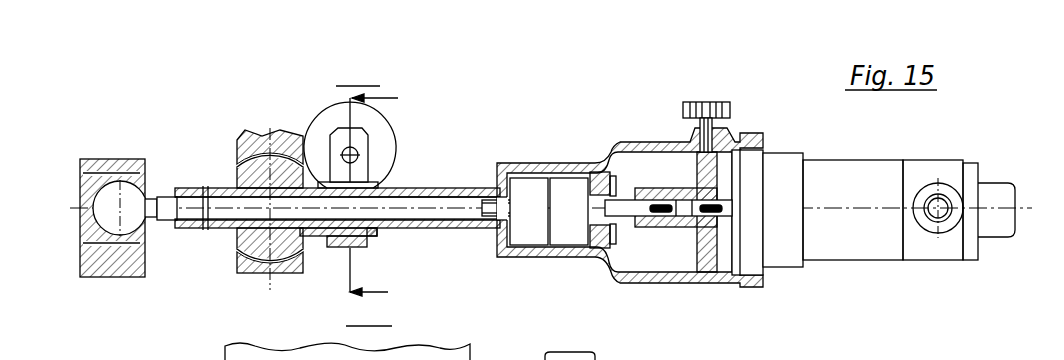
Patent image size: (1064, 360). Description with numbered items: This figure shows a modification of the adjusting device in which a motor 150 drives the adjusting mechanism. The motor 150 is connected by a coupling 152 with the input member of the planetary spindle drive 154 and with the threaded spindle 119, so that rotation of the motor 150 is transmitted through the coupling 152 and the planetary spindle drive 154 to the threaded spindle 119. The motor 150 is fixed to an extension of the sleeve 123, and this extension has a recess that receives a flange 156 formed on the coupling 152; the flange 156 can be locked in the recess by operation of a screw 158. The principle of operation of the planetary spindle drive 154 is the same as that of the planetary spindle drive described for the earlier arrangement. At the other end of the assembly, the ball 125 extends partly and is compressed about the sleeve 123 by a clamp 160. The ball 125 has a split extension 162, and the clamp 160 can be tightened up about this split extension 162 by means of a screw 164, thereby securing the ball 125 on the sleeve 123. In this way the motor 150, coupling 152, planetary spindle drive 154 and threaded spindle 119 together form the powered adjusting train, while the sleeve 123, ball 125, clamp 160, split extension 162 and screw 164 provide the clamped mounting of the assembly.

The threaded spindle 119 is at (438, 218).
The sleeve 123 is at (188, 229).
The ball 125 is at (252, 172).
The motor 150 is at (863, 249).
The coupling 152 is at (638, 231).
The planetary spindle drive 154 is at (528, 236).
The flange 156 is at (700, 244).
The screw 158 is at (708, 104).
The clamp 160 is at (330, 242).
The split extension 162 is at (372, 238).
The screw 164 is at (390, 138).